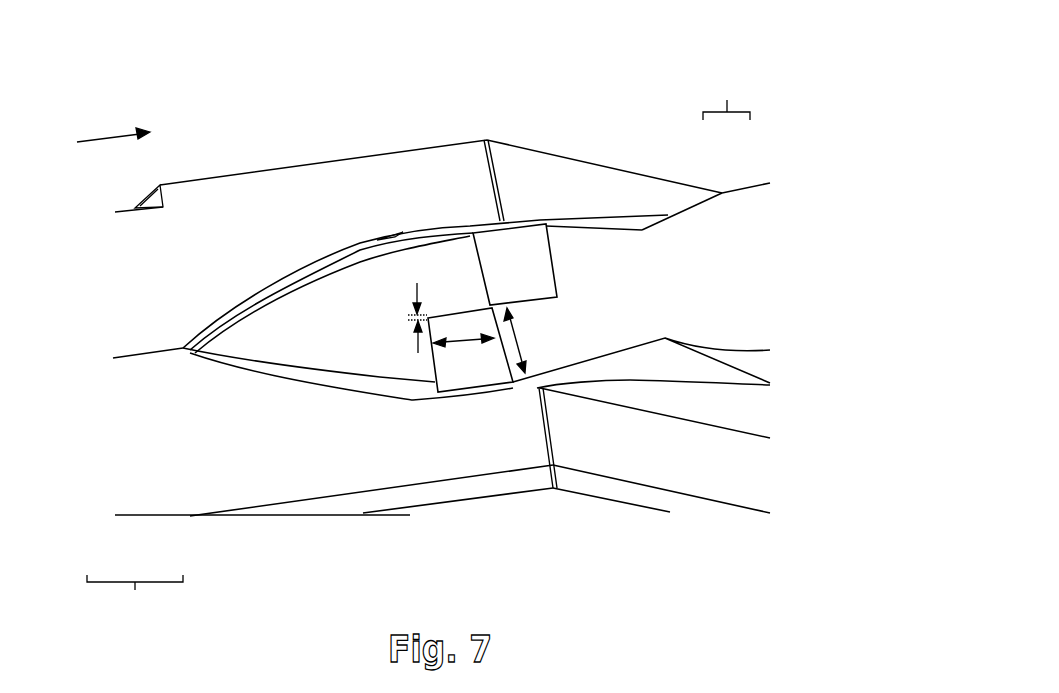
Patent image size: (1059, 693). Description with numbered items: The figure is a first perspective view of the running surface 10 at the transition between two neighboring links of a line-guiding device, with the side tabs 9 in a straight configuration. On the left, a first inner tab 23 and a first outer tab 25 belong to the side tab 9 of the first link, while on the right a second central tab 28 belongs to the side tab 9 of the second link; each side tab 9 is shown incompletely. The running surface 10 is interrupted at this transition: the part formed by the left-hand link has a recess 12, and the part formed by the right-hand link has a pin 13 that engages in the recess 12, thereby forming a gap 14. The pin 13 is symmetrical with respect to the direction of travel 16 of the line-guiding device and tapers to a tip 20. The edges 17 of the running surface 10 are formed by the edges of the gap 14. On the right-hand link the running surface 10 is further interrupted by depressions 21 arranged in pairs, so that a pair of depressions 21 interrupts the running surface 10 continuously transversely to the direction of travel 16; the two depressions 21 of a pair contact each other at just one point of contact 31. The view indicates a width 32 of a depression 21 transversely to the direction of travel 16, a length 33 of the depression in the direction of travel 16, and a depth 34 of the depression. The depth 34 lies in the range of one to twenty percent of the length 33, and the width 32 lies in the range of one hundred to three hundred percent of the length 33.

The side tab 9 is at (418, 346).
The running surface 10 is at (253, 203).
The recess 12 is at (253, 373).
The pin 13 is at (393, 345).
The gap 14 is at (330, 382).
The direction of travel 16 is at (120, 133).
The edges 17 is at (448, 240).
The tip 20 is at (220, 343).
The depressions 21 is at (527, 250).
The first inner tab 23 is at (172, 470).
The first outer tab 25 is at (153, 310).
The second central tab 28 is at (735, 213).
The point of contact 31 is at (490, 305).
The width 32 is at (522, 347).
The length 33 is at (463, 342).
The depth 34 is at (408, 317).